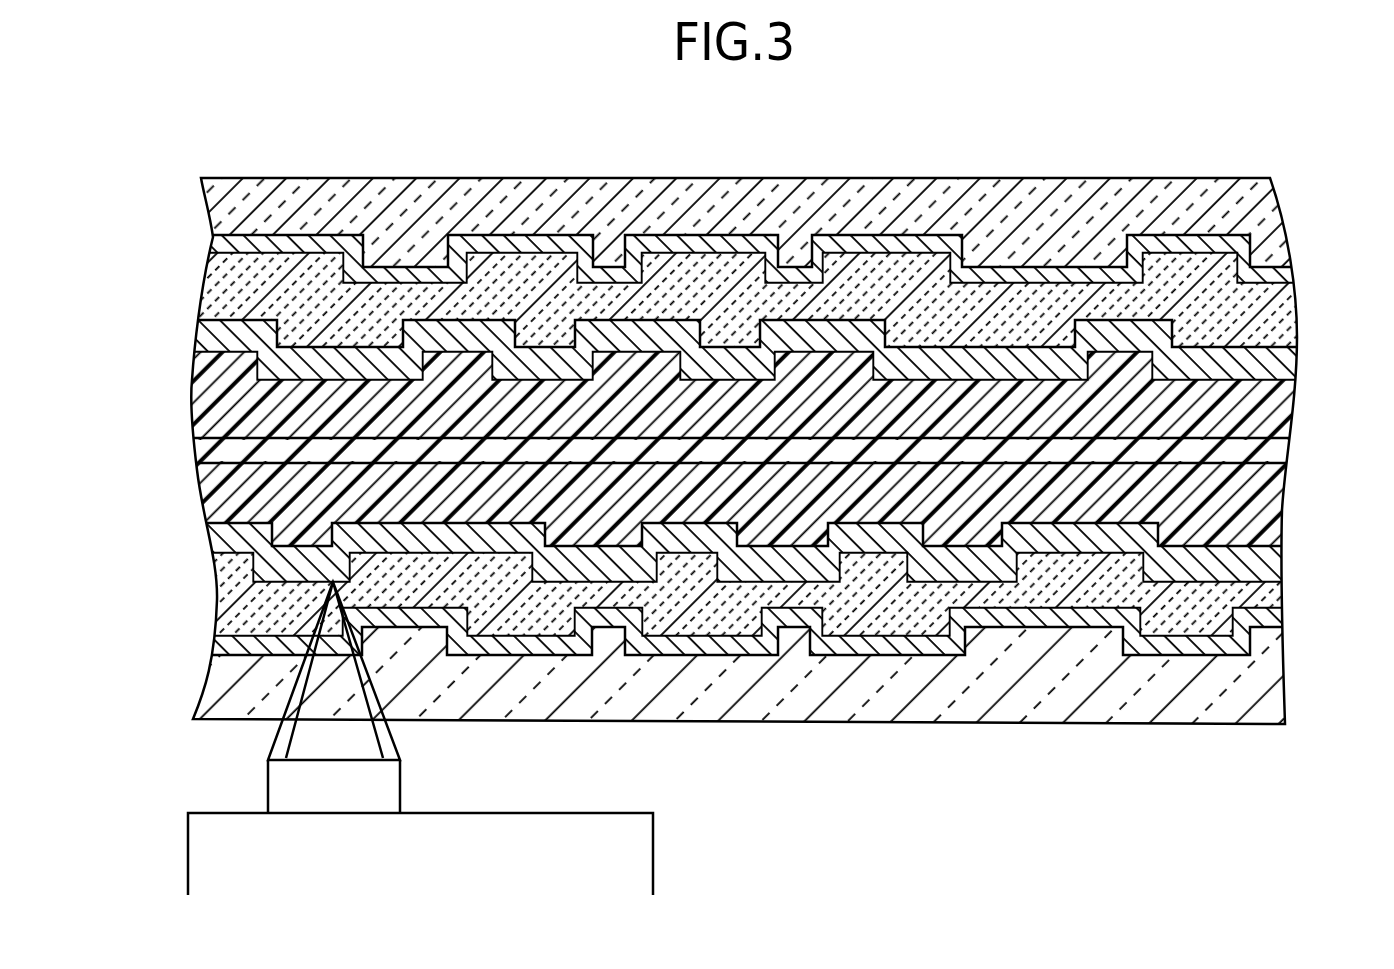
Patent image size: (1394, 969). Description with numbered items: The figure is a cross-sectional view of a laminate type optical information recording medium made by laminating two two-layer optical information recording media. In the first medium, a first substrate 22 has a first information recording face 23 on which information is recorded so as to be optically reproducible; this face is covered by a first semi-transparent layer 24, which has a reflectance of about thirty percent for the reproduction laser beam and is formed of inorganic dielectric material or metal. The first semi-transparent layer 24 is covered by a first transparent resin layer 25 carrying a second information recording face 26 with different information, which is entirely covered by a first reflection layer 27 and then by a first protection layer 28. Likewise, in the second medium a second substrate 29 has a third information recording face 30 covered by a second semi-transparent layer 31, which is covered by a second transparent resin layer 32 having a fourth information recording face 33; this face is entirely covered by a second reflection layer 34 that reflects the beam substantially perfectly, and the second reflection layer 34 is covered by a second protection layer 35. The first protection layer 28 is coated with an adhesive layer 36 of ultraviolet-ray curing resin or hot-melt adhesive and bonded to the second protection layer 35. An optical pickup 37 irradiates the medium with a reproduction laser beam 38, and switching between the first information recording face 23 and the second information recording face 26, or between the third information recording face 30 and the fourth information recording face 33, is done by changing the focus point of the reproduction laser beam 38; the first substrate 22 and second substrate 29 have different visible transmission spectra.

The first substrate 22 is at (1247, 685).
The first information recording face 23 is at (1080, 630).
The first semi-transparent layer 24 is at (1217, 627).
The first transparent resin layer 25 is at (730, 615).
The second information recording face 26 is at (1120, 557).
The first reflection layer 27 is at (643, 570).
The first protection layer 28 is at (1242, 519).
The second substrate 29 is at (290, 212).
The third information recording face 30 is at (1077, 267).
The second semi-transparent layer 31 is at (827, 240).
The second transparent resin layer 32 is at (722, 270).
The fourth information recording face 33 is at (1147, 322).
The second reflection layer 34 is at (493, 322).
The second protection layer 35 is at (1237, 403).
The adhesive layer 36 is at (1278, 443).
The optical pickup 37 is at (220, 812).
The reproduction laser beam 38 is at (365, 735).